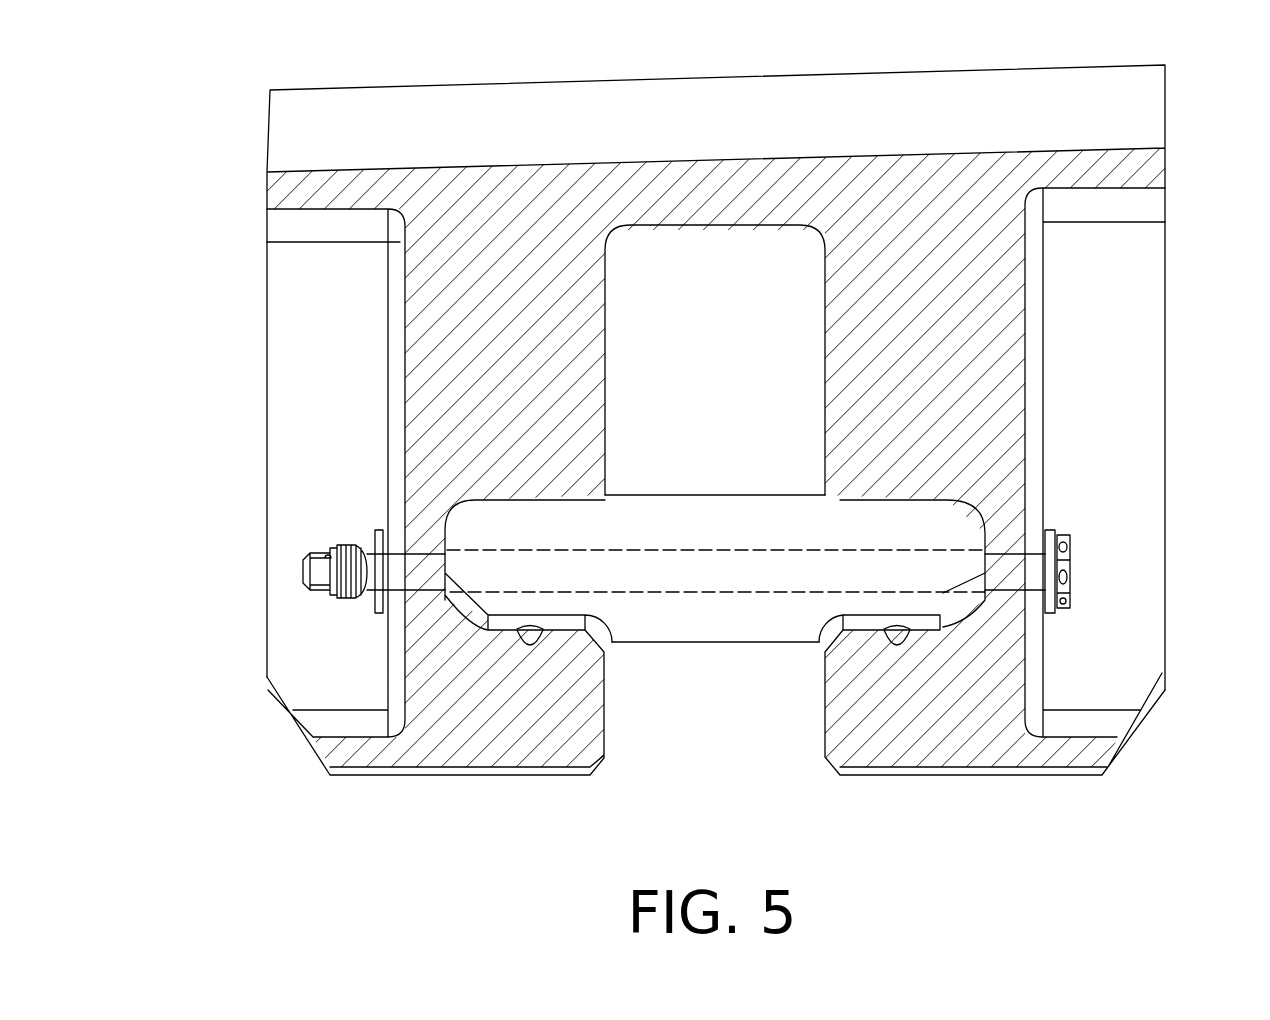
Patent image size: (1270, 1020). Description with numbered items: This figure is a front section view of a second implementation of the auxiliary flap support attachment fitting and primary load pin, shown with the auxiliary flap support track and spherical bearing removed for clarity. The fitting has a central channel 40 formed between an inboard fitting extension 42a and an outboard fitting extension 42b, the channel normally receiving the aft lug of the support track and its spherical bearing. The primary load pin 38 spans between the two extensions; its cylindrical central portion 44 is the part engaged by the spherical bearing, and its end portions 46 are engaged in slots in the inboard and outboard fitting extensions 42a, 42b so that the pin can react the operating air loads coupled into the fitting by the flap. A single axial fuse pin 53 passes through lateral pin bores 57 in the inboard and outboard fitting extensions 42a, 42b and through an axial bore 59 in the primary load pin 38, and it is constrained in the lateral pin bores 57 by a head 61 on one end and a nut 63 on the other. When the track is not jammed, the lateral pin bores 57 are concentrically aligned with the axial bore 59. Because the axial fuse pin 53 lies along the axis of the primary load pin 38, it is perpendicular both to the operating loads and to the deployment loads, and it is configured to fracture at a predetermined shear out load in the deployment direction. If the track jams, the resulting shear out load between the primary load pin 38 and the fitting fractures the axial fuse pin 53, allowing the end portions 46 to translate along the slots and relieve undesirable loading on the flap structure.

The primary load pin 38 is at (718, 643).
The central channel 40 is at (718, 292).
The inboard fitting extension 42a is at (483, 703).
The outboard fitting extension 42b is at (980, 720).
The cylindrical central portion 44 is at (758, 607).
The end portions 46 is at (517, 532).
The axial fuse pin 53 is at (420, 572).
The lateral pin bores 57 is at (427, 552).
The axial bore 59 is at (620, 552).
The head 61 is at (1063, 563).
The nut 63 is at (357, 570).